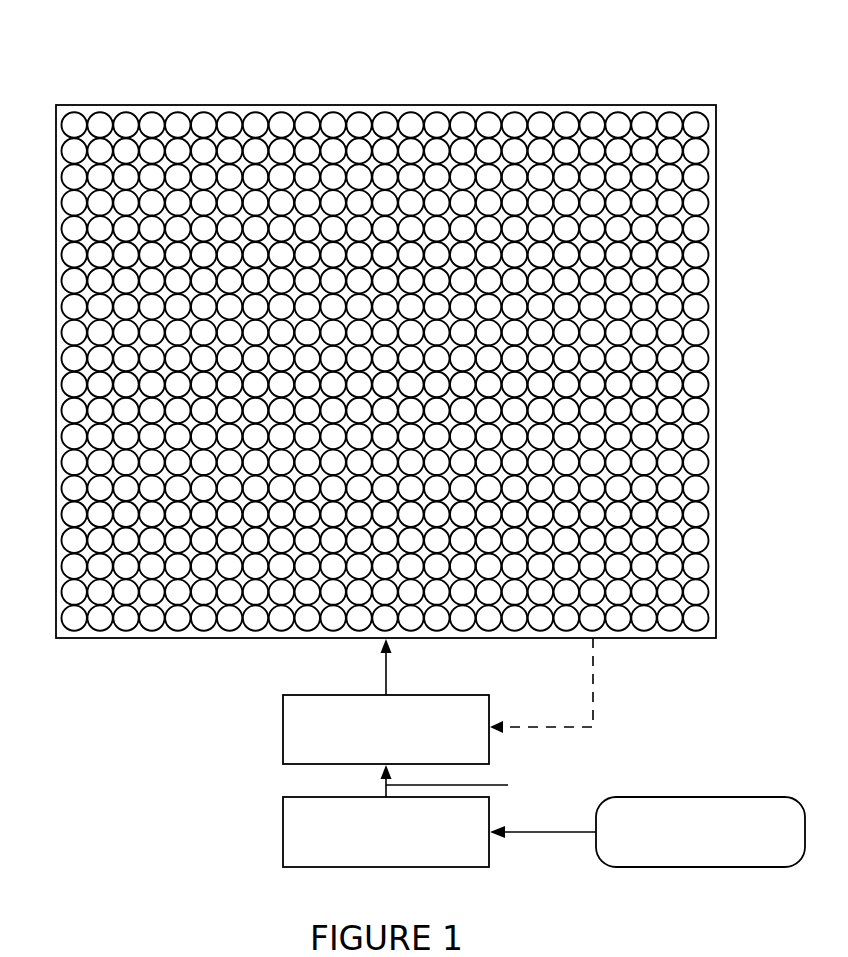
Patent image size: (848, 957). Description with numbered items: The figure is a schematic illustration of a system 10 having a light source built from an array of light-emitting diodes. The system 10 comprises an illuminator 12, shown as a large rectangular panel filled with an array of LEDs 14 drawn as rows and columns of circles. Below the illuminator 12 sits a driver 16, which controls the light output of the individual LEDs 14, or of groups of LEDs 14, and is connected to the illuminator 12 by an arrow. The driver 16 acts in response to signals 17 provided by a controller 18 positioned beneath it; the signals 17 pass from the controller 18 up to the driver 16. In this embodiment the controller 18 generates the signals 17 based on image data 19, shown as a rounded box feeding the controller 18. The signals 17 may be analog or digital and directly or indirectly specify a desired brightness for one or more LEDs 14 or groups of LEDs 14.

The system 10 is at (632, 61).
The illuminator 12 is at (665, 105).
The LEDs 14 is at (100, 125).
The driver 16 is at (283, 728).
The signals 17 is at (508, 785).
The controller 18 is at (283, 831).
The image data 19 is at (702, 797).